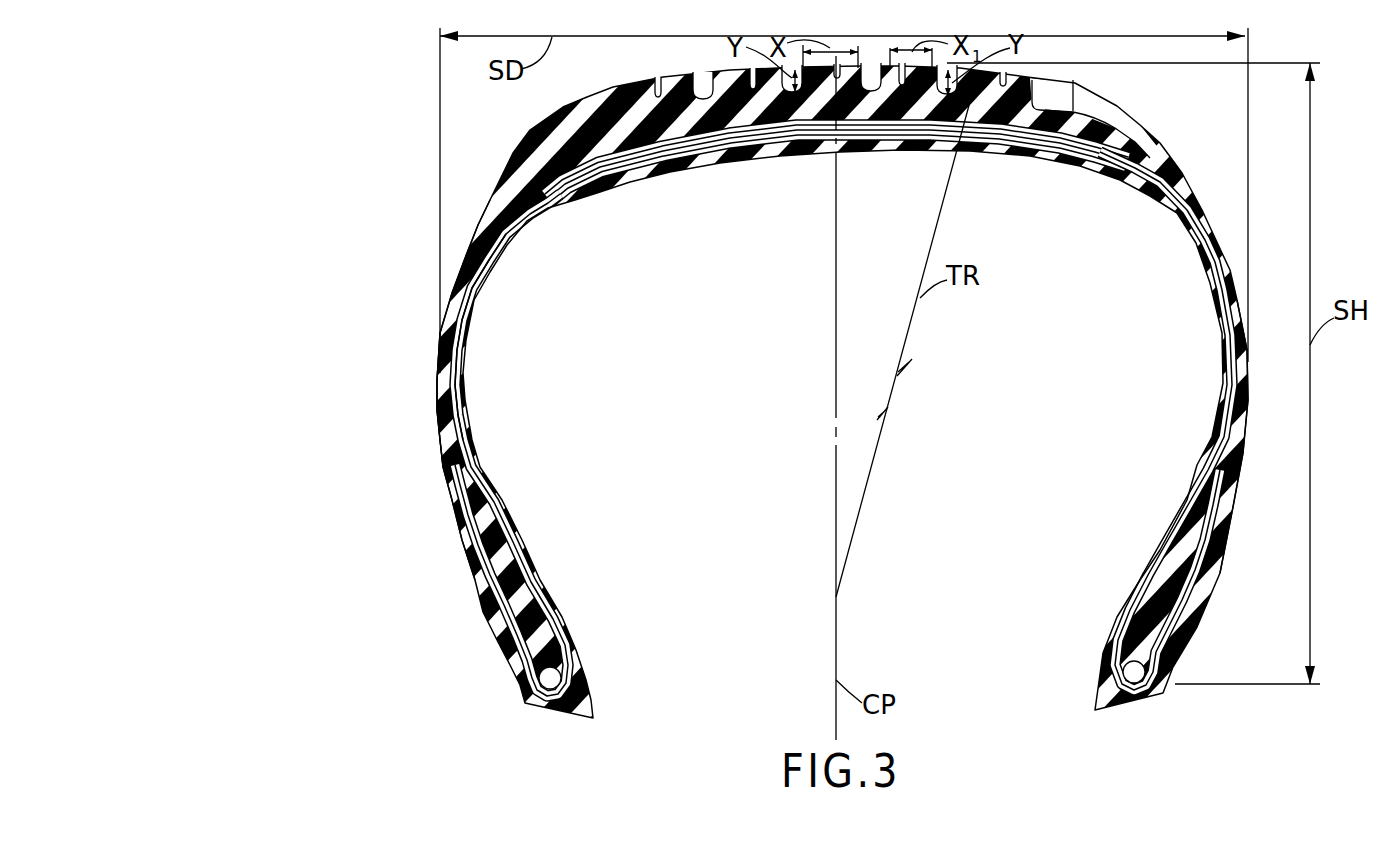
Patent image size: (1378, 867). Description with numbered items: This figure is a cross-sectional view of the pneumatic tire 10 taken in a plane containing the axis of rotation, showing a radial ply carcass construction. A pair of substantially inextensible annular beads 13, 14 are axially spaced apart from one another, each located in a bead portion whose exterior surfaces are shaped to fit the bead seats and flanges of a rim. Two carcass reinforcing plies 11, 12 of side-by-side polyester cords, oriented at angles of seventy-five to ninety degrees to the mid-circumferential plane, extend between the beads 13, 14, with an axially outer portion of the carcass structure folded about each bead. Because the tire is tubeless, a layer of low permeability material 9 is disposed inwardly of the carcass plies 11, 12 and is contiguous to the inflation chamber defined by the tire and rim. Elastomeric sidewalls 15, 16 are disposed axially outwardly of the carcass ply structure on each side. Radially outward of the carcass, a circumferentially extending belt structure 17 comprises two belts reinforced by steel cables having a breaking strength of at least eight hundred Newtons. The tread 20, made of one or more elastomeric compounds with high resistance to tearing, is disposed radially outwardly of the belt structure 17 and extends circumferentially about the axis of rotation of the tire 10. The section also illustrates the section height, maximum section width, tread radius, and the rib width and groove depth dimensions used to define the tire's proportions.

The layer of low permeability material 9 is at (476, 292).
The pneumatic tire 10 is at (886, 383).
The carcass reinforcing ply 11 is at (447, 402).
The carcass reinforcing ply 12 is at (455, 366).
The annular bead 13 is at (558, 681).
The annular bead 14 is at (1128, 673).
The elastomeric sidewall 15 is at (449, 469).
The elastomeric sidewall 16 is at (1235, 478).
The belt structure 17 is at (681, 133).
The tread 20 is at (592, 98).